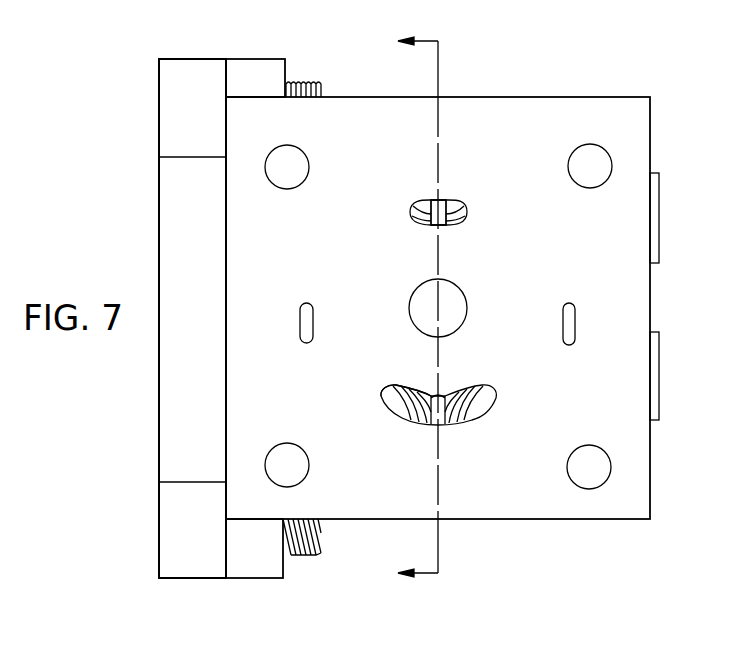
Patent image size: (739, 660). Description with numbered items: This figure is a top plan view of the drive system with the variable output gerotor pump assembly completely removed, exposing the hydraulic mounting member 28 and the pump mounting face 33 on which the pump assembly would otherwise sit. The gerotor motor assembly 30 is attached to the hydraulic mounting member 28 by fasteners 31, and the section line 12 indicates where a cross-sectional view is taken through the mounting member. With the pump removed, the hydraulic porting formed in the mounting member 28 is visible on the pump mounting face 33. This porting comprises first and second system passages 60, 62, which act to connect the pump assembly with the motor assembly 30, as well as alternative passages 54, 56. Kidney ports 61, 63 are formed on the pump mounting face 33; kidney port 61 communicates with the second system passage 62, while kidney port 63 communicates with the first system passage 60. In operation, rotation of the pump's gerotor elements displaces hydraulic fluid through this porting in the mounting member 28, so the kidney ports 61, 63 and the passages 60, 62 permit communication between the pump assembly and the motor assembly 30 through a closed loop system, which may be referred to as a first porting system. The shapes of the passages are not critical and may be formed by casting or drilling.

The section line 12- 12 is at (397, 309).
The hydraulic mounting member 28 is at (650, 133).
The gerotor motor assembly 30 is at (130, 527).
The fasteners 31 is at (298, 83).
The pump mounting face 33 is at (541, 254).
The alternative passage 54 is at (573, 318).
The alternative passage 56 is at (304, 322).
The first system passage 60 is at (452, 418).
The kidney port 61 is at (410, 207).
The second system passage 62 is at (450, 203).
The kidney port 63 is at (384, 391).